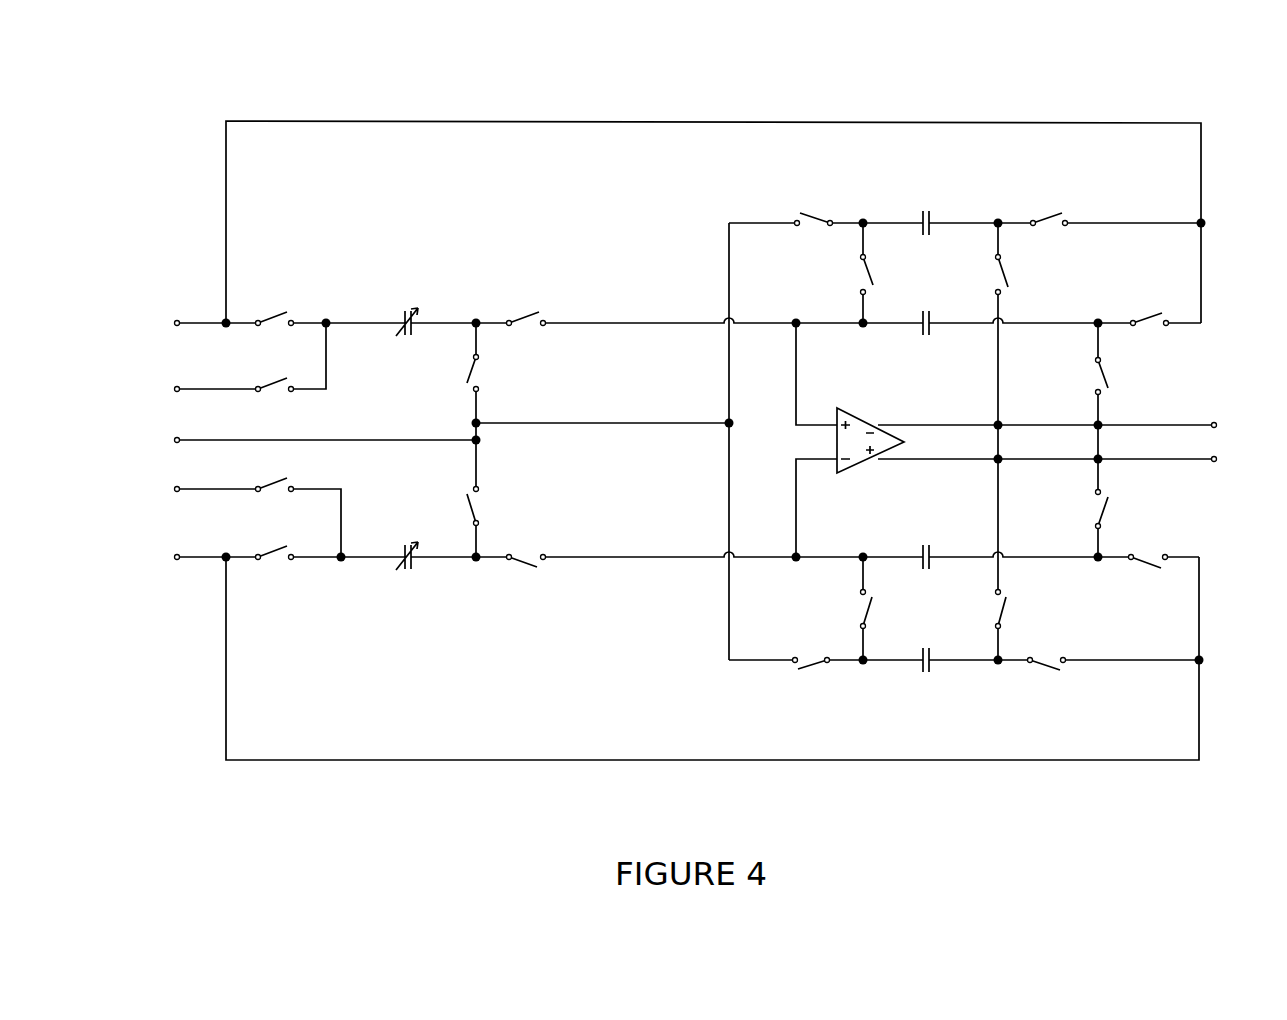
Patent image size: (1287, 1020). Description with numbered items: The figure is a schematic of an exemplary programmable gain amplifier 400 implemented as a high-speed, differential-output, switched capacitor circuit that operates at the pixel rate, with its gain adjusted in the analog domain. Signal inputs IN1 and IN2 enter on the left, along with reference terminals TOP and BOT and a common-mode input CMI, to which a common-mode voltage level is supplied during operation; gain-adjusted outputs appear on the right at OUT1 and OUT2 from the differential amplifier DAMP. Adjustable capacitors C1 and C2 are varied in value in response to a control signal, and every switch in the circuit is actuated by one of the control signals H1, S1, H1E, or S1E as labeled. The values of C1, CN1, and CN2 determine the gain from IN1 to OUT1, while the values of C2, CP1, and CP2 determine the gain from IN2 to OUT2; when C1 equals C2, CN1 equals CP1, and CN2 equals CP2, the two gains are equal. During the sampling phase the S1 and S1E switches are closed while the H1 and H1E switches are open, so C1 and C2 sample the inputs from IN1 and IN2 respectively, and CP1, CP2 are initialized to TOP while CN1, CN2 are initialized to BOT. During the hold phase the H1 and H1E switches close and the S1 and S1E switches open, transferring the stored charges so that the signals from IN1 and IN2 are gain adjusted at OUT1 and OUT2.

The programmable gain amplifier 400 is at (148, 85).
The TOP reference input TOP is at (659, 323).
The BOT reference input BOT is at (658, 557).
The first input IN1 is at (225, 362).
The second input IN2 is at (233, 517).
The common-mode input CMI is at (298, 440).
The first output OUT1 is at (1080, 426).
The second output OUT2 is at (1080, 460).
The capacitor C1 is at (408, 313).
The capacitor C2 is at (408, 547).
The capacitor CN1 is at (965, 212).
The capacitor CN2 is at (926, 312).
The capacitor CP1 is at (964, 671).
The capacitor CP2 is at (923, 569).
The differential amplifier DAMP is at (860, 468).
The H1 switches H1 is at (682, 441).
The H1E switches H1E is at (669, 441).
The S1 switches S1 is at (712, 442).
The S1E switches S1E is at (670, 442).